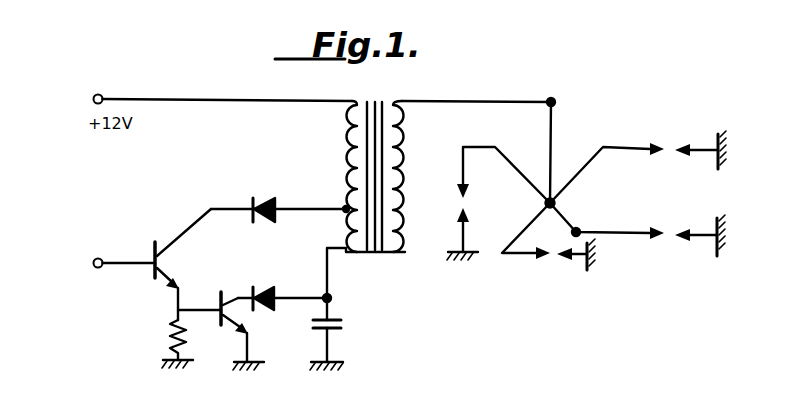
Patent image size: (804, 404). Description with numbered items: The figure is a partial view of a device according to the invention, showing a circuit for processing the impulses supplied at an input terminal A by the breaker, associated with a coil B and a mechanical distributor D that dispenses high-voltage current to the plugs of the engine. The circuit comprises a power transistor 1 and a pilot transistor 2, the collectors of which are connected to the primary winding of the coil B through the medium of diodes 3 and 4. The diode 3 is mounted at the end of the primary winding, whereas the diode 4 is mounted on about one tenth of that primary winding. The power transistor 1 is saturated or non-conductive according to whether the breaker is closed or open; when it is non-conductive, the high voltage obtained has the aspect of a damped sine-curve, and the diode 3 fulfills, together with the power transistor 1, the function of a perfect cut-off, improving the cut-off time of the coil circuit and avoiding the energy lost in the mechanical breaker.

The power transistor 1 is at (214, 301).
The pilot transistor 2 is at (146, 248).
The diode 3 is at (267, 283).
The diode 4 is at (266, 195).
The input terminal A is at (84, 266).
The coil B is at (358, 141).
The mechanical distributor D is at (562, 204).